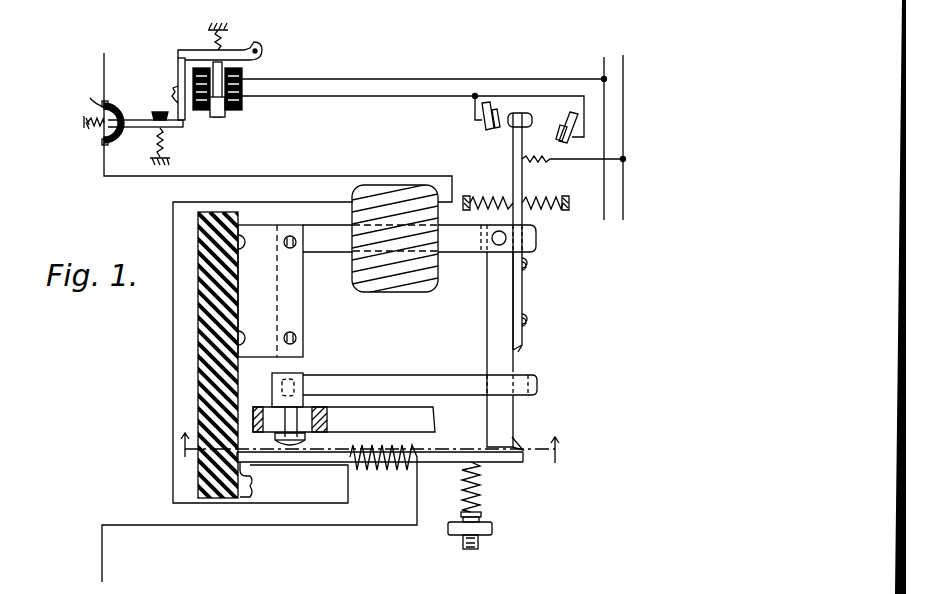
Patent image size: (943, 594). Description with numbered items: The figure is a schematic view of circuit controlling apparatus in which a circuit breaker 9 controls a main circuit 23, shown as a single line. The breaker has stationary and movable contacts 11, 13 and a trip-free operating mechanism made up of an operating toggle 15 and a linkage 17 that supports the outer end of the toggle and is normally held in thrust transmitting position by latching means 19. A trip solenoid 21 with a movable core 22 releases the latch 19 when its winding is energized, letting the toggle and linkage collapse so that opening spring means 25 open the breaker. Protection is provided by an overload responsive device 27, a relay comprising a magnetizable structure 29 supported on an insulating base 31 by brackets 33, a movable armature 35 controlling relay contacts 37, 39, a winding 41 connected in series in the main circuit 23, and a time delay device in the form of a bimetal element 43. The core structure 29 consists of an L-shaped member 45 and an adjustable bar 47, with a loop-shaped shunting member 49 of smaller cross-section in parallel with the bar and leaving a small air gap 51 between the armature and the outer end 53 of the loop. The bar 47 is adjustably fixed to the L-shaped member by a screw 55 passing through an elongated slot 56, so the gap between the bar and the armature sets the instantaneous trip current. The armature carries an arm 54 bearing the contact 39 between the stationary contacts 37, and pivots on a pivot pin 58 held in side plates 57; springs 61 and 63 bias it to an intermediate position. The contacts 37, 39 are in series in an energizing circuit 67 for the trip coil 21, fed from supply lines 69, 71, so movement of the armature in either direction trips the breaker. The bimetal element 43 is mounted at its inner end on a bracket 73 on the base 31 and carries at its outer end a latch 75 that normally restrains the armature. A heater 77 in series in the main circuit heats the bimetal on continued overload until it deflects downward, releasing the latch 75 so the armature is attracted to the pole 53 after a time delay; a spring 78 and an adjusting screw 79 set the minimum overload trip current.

The circuit breaker 9 is at (140, 105).
The stationary contact 11 is at (95, 135).
The movable contact 13 is at (122, 127).
The operating toggle 15 is at (170, 125).
The linkage 17 is at (178, 80).
The latching means 19 is at (196, 48).
The trip solenoid 21 is at (226, 137).
The movable core 22 is at (242, 102).
The main circuit 23 is at (104, 62).
The opening spring means 25 is at (83, 96).
The overload responsive device 27 is at (406, 346).
The magnetizable structure 29 is at (272, 398).
The insulating base 31 is at (197, 305).
The brackets 33 is at (273, 221).
The movable armature 35 is at (507, 300).
The stationary contacts 37 is at (518, 134).
The relay contact 39 is at (513, 127).
The winding 41 is at (408, 290).
The bimetal element 43 is at (331, 464).
The L-shaped member 45 is at (333, 247).
The adjustable bar 47 is at (431, 422).
The shunting member 49 is at (352, 353).
The air gap 51 is at (524, 374).
The outer end 53 is at (538, 383).
The arm 54 is at (527, 273).
The screw 55 is at (310, 450).
The elongated slot 56 is at (270, 437).
The side plates 57 is at (477, 255).
The pivot pin 58 is at (506, 238).
The spring 61 is at (545, 188).
The spring 63 is at (505, 198).
The energizing circuit 67 is at (354, 60).
The supply line 69 is at (604, 66).
The supply line 71 is at (623, 80).
The bracket 73 is at (250, 483).
The latch 75 is at (523, 440).
The heater 77 is at (393, 472).
The spring 78 is at (480, 485).
The adjusting screw 79 is at (480, 543).